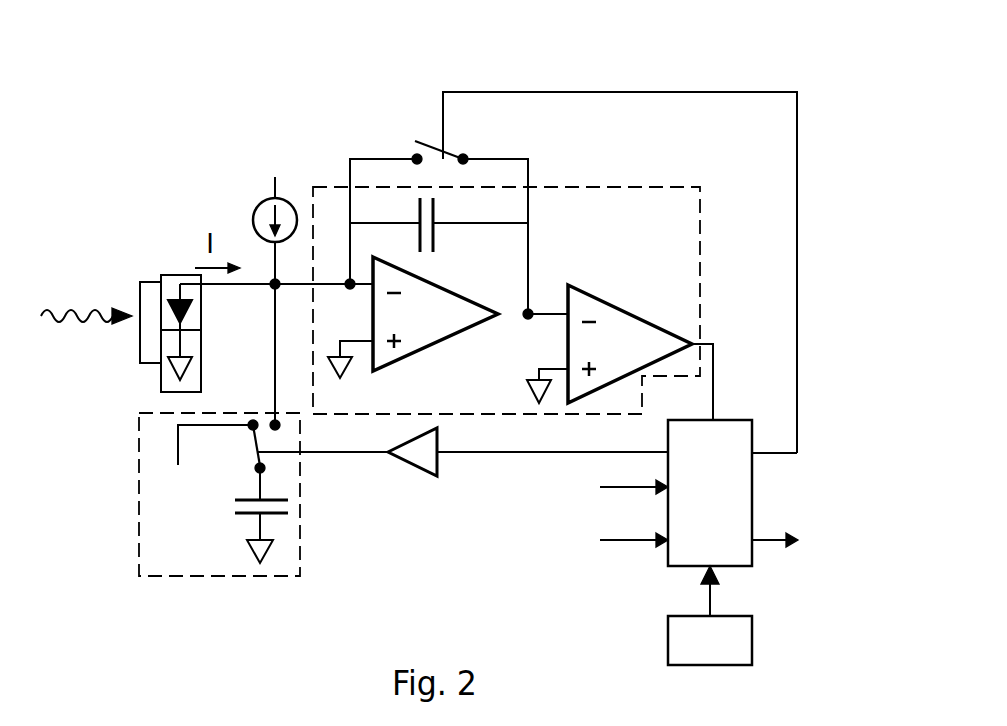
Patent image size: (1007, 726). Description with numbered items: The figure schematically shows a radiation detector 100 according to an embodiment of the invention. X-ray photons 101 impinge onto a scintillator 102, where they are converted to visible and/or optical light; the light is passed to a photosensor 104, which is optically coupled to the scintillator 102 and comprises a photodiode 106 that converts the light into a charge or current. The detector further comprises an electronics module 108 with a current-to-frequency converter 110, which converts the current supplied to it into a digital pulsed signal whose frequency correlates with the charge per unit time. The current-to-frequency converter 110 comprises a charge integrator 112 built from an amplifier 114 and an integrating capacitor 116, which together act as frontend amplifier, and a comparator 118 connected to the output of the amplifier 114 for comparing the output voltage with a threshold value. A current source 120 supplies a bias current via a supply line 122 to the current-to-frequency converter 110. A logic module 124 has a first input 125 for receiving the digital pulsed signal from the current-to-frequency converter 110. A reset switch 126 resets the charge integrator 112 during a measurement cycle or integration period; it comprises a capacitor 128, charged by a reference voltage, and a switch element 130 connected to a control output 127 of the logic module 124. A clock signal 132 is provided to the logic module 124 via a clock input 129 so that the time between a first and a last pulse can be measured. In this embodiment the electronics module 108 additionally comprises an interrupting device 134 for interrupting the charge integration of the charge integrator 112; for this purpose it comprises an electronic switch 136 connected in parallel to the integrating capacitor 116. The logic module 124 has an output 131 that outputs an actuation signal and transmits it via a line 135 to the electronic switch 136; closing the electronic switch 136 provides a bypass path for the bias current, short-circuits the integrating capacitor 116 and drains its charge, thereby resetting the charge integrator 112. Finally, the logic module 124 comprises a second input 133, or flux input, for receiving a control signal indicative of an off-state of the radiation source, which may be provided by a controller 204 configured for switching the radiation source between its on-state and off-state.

The radiation detector 100 is at (760, 69).
The X-ray photons 101 is at (110, 305).
The scintillator 102 is at (140, 363).
The photosensor 104 is at (160, 395).
The photodiode 106 is at (185, 315).
The electronics module 108 is at (222, 175).
The current-to-frequency converter 110 is at (688, 177).
The charge integrator 112 is at (488, 218).
The amplifier 114 is at (442, 325).
The integrating capacitor 116 is at (433, 235).
The comparator 118 is at (627, 333).
The current source 120 is at (260, 187).
The supply line 122 is at (270, 268).
The logic module 124 is at (753, 500).
The first input 125 is at (713, 418).
The reset switch 126 is at (215, 577).
The control output 127 is at (668, 462).
The capacitor 128 is at (275, 515).
The clock input 129 is at (668, 542).
The switch element 130 is at (257, 452).
The output 131 is at (752, 452).
The clock signal 132 is at (608, 542).
The second input 133 is at (718, 567).
The interrupting device 134 is at (803, 177).
The line 135 is at (797, 272).
The electronic switch 136 is at (412, 130).
The controller 204 is at (752, 650).